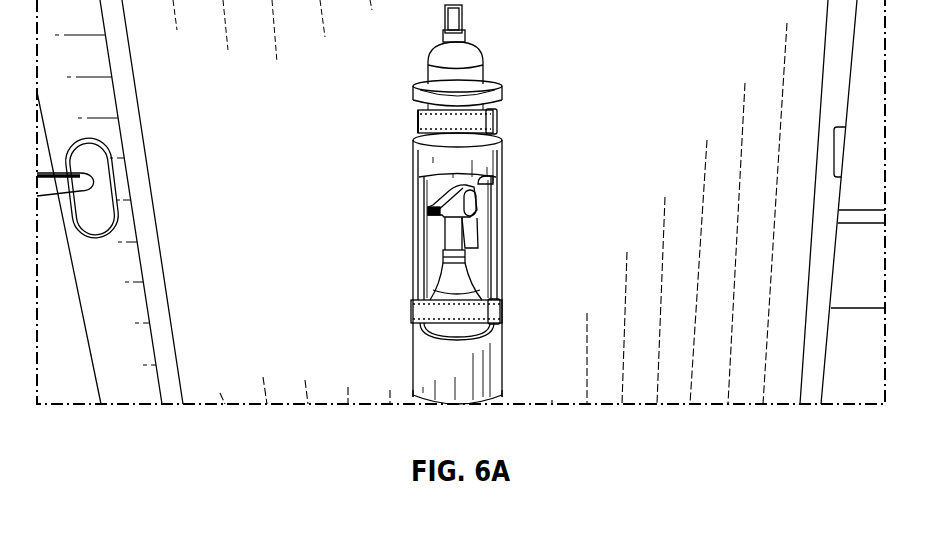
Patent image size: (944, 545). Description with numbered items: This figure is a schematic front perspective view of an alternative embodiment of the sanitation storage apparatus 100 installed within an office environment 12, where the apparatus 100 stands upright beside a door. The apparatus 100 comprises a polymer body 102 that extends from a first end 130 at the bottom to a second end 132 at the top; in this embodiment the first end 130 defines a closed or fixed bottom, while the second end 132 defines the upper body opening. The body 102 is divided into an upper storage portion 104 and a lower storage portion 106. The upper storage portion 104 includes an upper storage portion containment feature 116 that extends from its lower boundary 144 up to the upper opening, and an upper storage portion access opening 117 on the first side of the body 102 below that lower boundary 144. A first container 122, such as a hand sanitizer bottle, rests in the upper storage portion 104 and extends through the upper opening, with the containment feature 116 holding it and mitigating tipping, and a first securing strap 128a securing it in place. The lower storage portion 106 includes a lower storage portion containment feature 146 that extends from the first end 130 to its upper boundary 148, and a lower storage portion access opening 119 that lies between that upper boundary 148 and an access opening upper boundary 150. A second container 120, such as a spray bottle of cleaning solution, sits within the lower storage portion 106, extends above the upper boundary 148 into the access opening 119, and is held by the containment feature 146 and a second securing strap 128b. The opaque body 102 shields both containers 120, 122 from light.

The room 12 is at (690, 71).
The sanitation storage apparatus 100 is at (452, 204).
The body 102 is at (432, 170).
The upper storage portion 104 is at (498, 136).
The lower storage portion 106 is at (427, 256).
The upper storage portion containment feature 116 is at (460, 100).
The upper storage portion access opening 117 is at (427, 133).
The lower storage portion access opening 119 is at (477, 282).
The second container 120 is at (495, 152).
The first container 122 is at (470, 57).
The first securing strap 128a is at (495, 107).
The second securing strap 128b is at (497, 306).
The first end 130 is at (497, 402).
The second end 132 is at (497, 83).
The lower boundary 144 is at (440, 108).
The lower storage portion containment feature 146 is at (470, 372).
The lower storage containment feature upper boundary 148 is at (490, 333).
The access opening upper boundary 150 is at (493, 182).